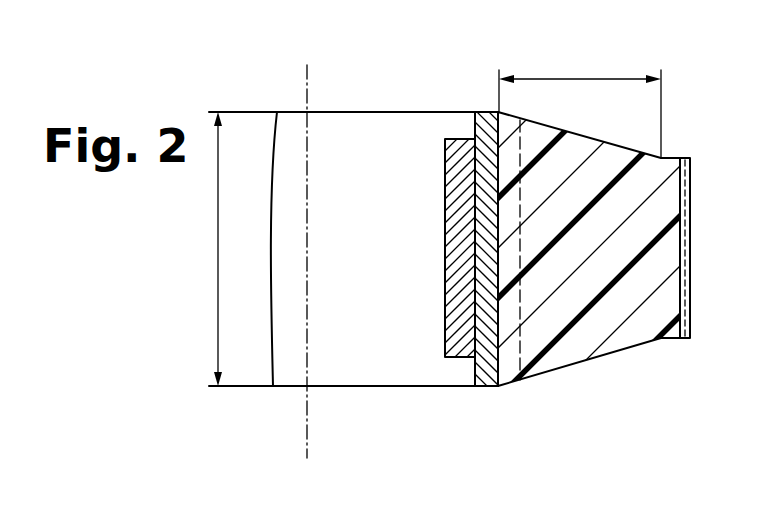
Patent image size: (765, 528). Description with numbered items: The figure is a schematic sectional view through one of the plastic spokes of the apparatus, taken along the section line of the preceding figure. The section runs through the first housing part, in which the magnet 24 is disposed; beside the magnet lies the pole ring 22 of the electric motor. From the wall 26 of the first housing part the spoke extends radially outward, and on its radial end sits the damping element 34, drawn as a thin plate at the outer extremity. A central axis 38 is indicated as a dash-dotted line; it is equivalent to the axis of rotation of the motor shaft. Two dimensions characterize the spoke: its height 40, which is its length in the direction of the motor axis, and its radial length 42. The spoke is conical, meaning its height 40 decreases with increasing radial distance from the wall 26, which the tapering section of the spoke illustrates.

The pole ring 22 is at (485, 353).
The magnet 24 is at (458, 323).
The wall 26 is at (540, 331).
The damping element 34 is at (671, 298).
The central axis 38 is at (306, 418).
The height 40 is at (212, 245).
The radial length 42 is at (578, 79).